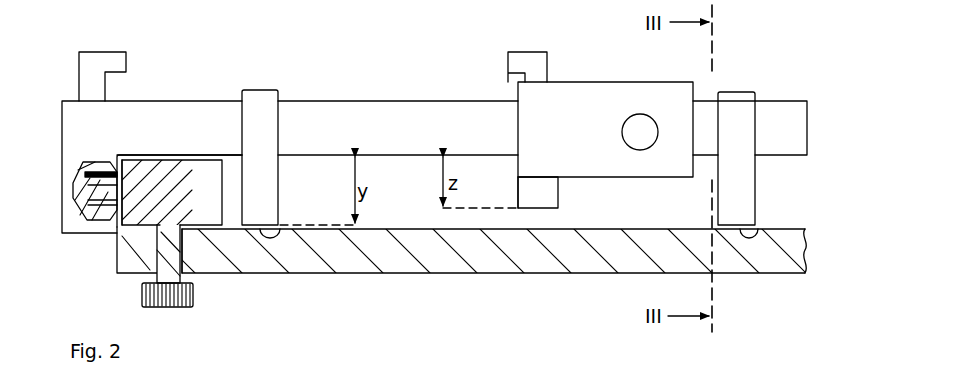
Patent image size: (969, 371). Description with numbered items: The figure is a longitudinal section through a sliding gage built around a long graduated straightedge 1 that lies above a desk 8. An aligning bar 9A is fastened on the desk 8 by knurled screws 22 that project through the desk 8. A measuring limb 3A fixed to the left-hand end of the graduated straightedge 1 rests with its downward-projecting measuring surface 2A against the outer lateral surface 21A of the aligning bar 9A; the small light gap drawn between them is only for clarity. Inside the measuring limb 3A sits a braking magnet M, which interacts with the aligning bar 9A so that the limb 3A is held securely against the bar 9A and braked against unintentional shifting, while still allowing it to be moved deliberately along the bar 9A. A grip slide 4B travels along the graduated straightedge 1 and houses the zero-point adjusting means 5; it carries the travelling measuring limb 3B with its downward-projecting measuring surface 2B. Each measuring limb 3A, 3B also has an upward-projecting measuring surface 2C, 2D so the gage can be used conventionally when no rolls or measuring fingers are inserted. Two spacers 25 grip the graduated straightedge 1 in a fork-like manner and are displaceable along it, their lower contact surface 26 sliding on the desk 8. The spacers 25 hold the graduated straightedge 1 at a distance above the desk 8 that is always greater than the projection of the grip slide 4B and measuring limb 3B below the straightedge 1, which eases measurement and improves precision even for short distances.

The graduated straightedge 1 is at (337, 118).
The measuring surface 2A is at (125, 182).
The measuring surface 2B is at (517, 198).
The measuring surface 2C is at (129, 63).
The measuring surface 2D is at (506, 63).
The measuring limb 3A is at (58, 194).
The measuring limb 3B is at (545, 198).
The grip slide 4B is at (572, 102).
The adjusting means 5 is at (640, 138).
The desk 8 is at (298, 260).
The aligning bar 9A is at (193, 173).
The outer lateral surface 21A is at (117, 210).
The knurled screws 22 is at (195, 302).
The spacers 25 is at (253, 113).
The lower contact surface 26 is at (280, 230).
The braking magnet M is at (97, 190).